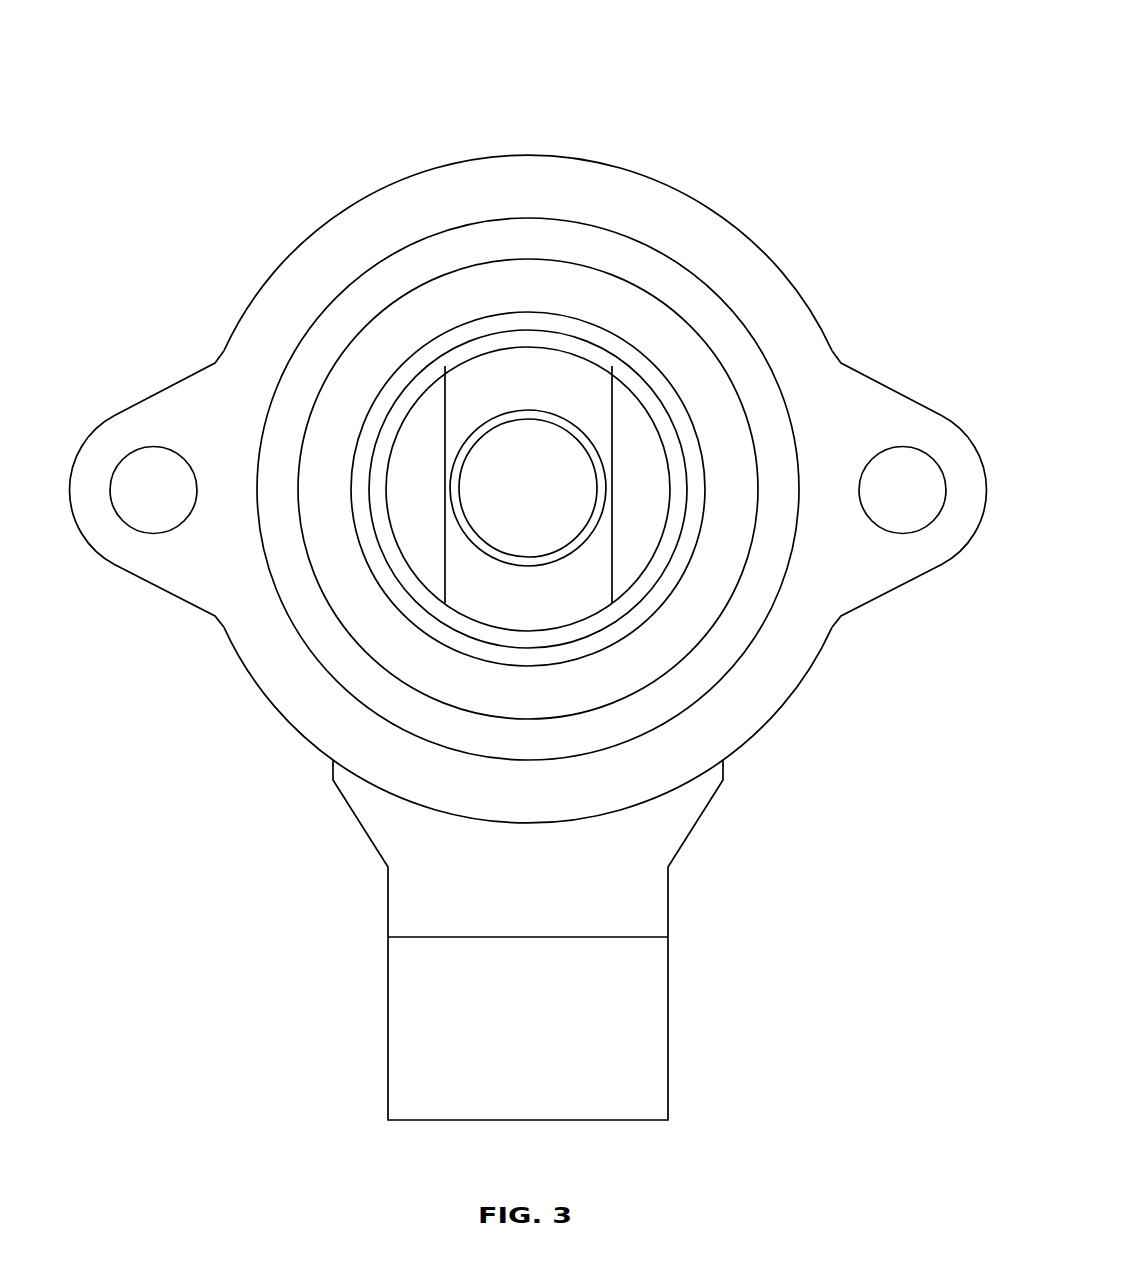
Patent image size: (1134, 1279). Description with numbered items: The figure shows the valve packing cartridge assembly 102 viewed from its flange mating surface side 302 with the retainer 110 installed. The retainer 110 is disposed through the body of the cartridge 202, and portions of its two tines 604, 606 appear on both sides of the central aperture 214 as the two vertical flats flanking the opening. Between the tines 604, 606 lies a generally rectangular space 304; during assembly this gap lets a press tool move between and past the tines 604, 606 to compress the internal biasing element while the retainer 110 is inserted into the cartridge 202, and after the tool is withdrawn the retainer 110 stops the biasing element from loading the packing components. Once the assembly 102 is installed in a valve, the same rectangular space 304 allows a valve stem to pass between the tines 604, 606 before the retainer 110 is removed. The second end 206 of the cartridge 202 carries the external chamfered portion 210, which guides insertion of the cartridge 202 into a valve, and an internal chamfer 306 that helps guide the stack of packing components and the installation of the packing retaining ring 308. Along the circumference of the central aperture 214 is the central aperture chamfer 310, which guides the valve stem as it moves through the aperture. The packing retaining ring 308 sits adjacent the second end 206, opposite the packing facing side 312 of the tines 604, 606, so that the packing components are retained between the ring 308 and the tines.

The valve packing cartridge assembly 102 is at (808, 33).
The retainer 110 is at (668, 1002).
The cartridge 202 is at (668, 257).
The second end 206 is at (387, 653).
The chamfered portion 210 is at (338, 315).
The central aperture 214 is at (543, 421).
The flange mating surface side 302 is at (162, 408).
The rectangular space 304 is at (535, 602).
The internal chamfer 306 is at (660, 390).
The packing retaining ring 308 is at (487, 635).
The central aperture chamfer 310 is at (495, 421).
The packing facing side 312 is at (422, 533).
The tine 604 is at (420, 493).
The tine 606 is at (632, 493).